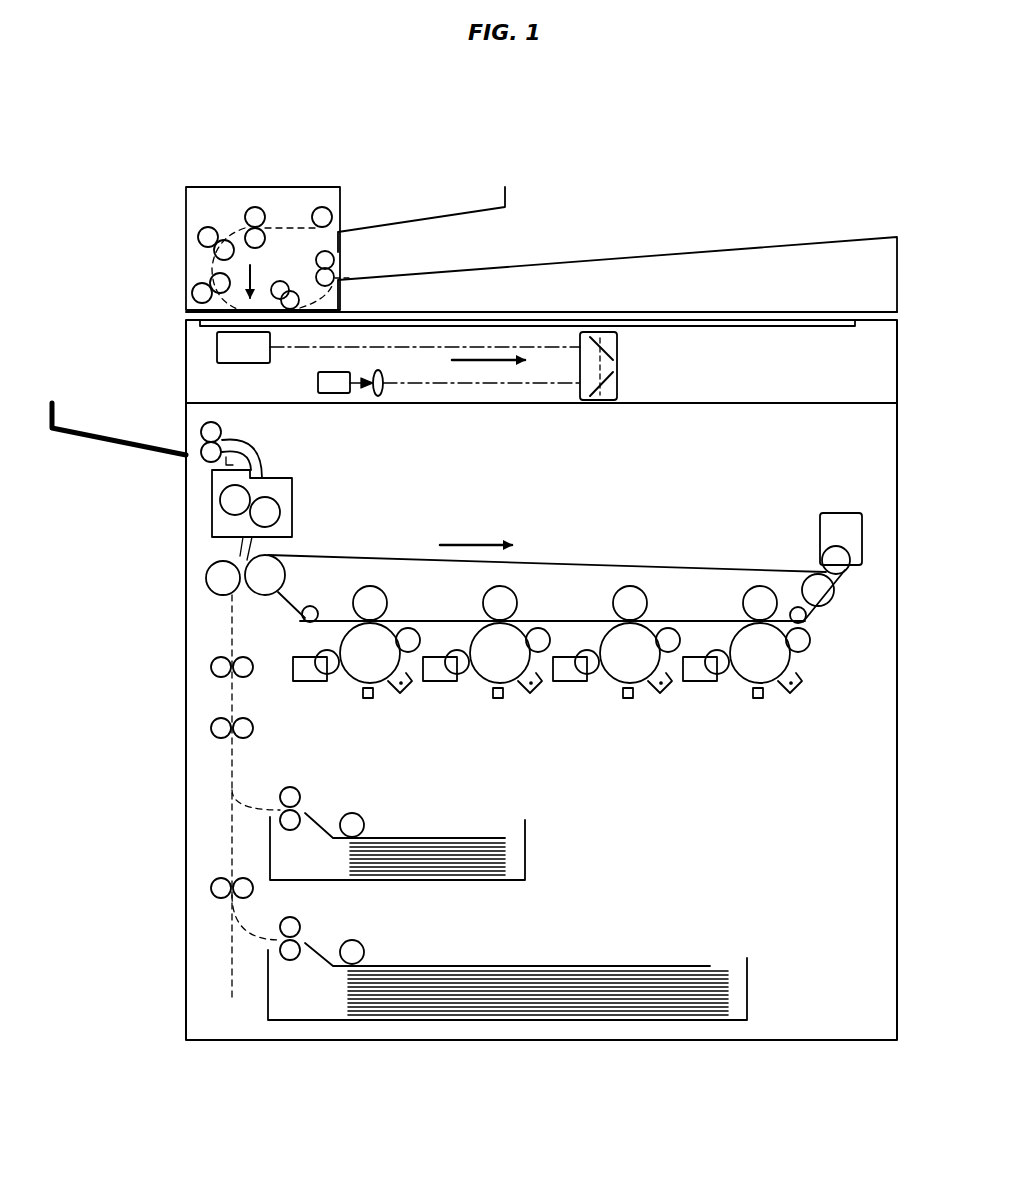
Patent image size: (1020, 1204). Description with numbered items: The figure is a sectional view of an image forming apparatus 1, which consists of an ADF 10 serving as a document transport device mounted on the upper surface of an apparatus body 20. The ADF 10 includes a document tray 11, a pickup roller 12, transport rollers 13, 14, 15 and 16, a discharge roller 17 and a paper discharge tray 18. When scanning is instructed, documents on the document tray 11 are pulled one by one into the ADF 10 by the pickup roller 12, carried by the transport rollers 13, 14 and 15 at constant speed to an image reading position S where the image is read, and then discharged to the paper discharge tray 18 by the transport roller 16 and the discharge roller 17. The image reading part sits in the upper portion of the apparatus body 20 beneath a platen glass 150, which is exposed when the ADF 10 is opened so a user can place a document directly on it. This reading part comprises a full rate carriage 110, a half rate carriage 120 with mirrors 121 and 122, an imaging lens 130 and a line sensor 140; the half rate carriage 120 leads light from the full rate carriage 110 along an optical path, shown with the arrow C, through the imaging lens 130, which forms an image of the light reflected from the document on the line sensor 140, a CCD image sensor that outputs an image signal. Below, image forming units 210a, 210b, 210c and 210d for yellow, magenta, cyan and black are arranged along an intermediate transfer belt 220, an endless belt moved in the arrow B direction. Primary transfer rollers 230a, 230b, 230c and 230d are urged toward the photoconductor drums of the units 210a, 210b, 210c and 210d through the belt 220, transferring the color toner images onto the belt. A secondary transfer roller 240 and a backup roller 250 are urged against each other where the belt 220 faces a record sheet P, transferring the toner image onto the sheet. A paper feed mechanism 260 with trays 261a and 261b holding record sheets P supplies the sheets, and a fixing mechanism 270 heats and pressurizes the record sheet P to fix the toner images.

The image forming apparatus 1 is at (697, 200).
The ADF 10 is at (178, 200).
The document tray 11 is at (430, 218).
The pickup roller 12 is at (322, 207).
The transport roller 13 is at (255, 207).
The transport roller 14 is at (198, 237).
The transport roller 15 is at (192, 293).
The transport roller 16 is at (300, 300).
The discharge roller 17 is at (334, 258).
The paper discharge tray 18 is at (556, 258).
The apparatus body 20 is at (175, 720).
The full rate carriage 110 is at (238, 363).
The half rate carriage 120 is at (618, 364).
The mirror 121 is at (617, 347).
The mirror 122 is at (617, 388).
The imaging lens 130 is at (384, 375).
The line sensor 140 is at (318, 382).
The platen glass 150 is at (795, 330).
The image forming unit 210a is at (350, 685).
The image forming unit 210b is at (480, 685).
The image forming unit 210c is at (610, 685).
The image forming unit 210d is at (740, 685).
The intermediate transfer belt 220 is at (612, 563).
The primary transfer roller 230a is at (388, 600).
The primary transfer roller 230b is at (518, 600).
The primary transfer roller 230c is at (640, 598).
The primary transfer roller 230d is at (744, 604).
The secondary transfer roller 240 is at (206, 578).
The backup roller 250 is at (285, 576).
The paper feed mechanism 260 is at (312, 795).
The tray 261a is at (528, 848).
The tray 261b is at (750, 985).
The fixing mechanism 270 is at (212, 503).
The record sheet P is at (445, 838).
The image reading position S is at (254, 277).
The arrow B direction B is at (488, 545).
The scanning direction C is at (502, 364).